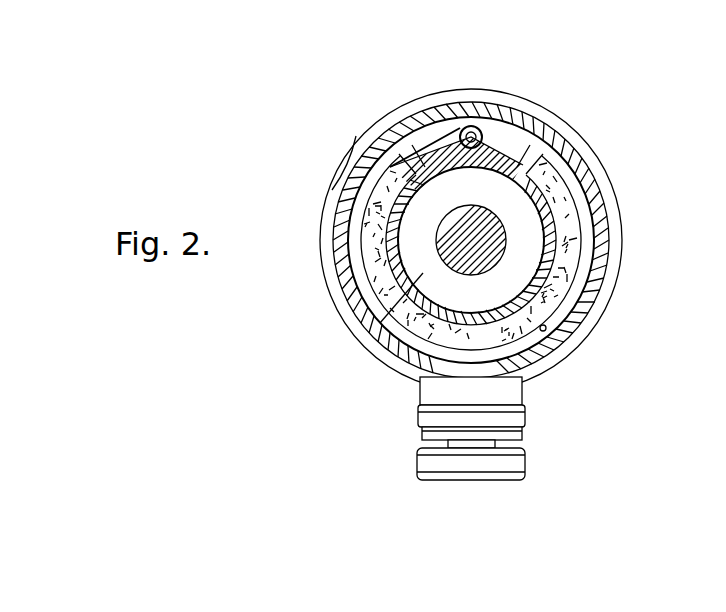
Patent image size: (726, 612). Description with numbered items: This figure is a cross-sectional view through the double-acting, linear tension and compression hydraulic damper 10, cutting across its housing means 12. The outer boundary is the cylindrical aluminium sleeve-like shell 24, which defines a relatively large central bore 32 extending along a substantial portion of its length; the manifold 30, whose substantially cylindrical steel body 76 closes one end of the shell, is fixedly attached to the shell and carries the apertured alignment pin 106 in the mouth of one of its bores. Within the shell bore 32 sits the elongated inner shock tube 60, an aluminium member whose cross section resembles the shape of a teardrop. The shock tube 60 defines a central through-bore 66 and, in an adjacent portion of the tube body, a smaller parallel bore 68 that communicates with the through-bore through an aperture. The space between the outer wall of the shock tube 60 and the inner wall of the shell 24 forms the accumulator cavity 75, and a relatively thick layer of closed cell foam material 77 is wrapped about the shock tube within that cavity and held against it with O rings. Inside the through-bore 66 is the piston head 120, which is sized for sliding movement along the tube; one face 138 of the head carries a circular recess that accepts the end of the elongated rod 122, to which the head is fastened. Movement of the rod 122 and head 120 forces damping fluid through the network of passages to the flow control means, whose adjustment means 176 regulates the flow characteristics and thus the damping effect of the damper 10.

The hydraulic damper 10 is at (350, 110).
The housing means 12 is at (624, 191).
The sleeve-like shell 24 is at (536, 134).
The manifold 30 is at (612, 146).
The central bore 32 is at (560, 128).
The inner shock tube 60 is at (438, 140).
The central through-bore 66 is at (540, 254).
The parallel bore 68 is at (484, 128).
The accumulator cavity 75 is at (546, 331).
The cylindrical body 76 is at (340, 160).
The closed cell foam material 77 is at (576, 262).
The alignment pin 106 is at (468, 127).
The piston head 120 is at (372, 337).
The elongated rod 122 is at (488, 180).
The face 138 is at (431, 247).
The adjustment means 176 is at (525, 462).